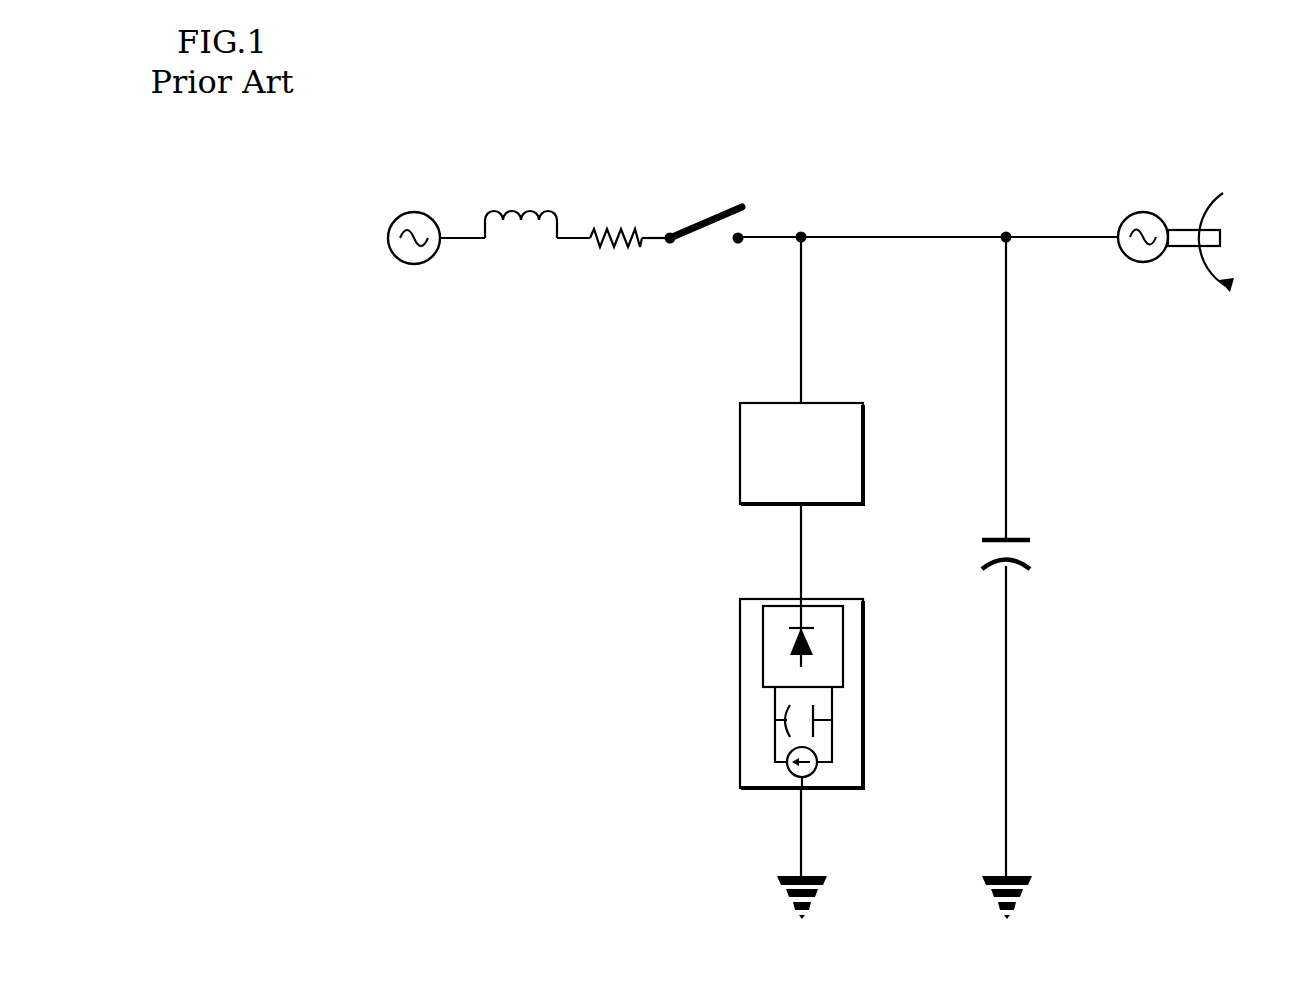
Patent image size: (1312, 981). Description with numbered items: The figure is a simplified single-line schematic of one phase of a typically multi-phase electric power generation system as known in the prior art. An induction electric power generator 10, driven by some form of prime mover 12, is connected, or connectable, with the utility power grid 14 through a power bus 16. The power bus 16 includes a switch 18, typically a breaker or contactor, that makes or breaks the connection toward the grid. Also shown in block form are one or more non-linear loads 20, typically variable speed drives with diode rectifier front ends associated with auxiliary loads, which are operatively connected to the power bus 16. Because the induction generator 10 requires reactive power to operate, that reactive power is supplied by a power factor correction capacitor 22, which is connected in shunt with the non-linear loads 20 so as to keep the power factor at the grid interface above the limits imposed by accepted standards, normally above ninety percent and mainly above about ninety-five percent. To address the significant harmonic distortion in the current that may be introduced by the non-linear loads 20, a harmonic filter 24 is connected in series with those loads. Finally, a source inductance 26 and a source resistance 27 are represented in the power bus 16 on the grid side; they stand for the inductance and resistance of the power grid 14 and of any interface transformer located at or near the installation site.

The induction electric power generator 10 is at (1122, 220).
The prime mover 12 is at (1216, 219).
The utility power grid 14 is at (394, 226).
The power bus 16 is at (900, 236).
The switch 18 is at (694, 228).
The non-linear loads 20 is at (740, 655).
The power factor correction capacitor 22 is at (1017, 536).
The harmonic filter 24 is at (760, 402).
The source inductance 26 is at (531, 214).
The source resistance 27 is at (606, 250).